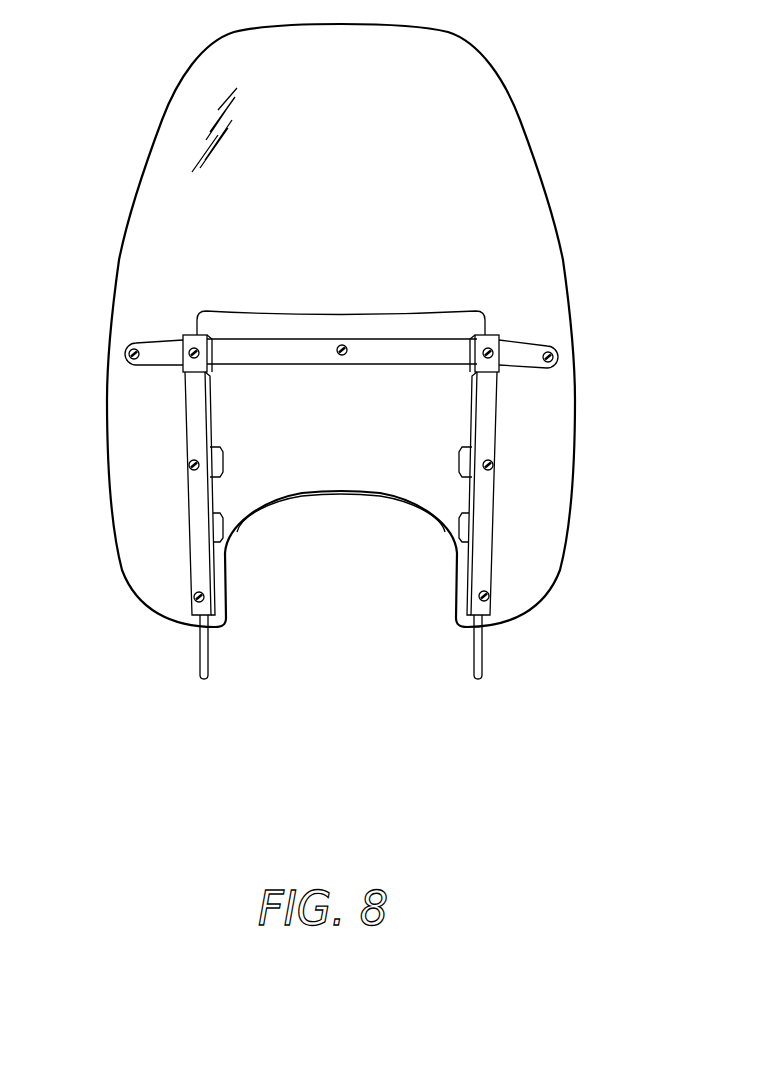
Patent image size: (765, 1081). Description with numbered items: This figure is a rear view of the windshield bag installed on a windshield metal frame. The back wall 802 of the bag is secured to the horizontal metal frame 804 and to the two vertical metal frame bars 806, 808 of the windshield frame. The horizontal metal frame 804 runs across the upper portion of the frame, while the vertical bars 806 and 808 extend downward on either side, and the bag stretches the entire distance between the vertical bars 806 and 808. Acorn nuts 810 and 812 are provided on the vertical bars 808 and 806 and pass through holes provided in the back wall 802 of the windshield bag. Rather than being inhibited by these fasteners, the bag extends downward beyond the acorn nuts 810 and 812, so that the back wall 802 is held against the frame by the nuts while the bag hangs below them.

The back wall 802 is at (468, 412).
The horizontal metal frame 804 is at (530, 350).
The vertical metal frame bar 806 is at (192, 412).
The vertical metal frame bar 808 is at (487, 560).
The acorn nut 810 is at (190, 462).
The acorn nut 812 is at (493, 462).